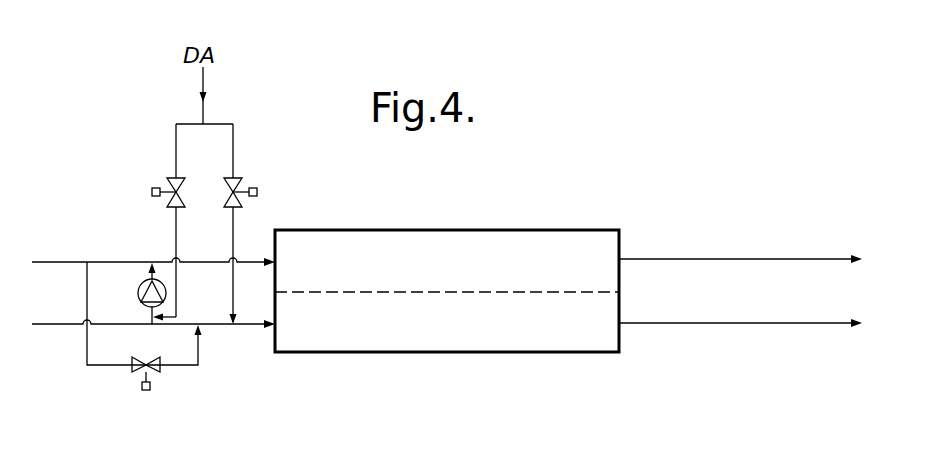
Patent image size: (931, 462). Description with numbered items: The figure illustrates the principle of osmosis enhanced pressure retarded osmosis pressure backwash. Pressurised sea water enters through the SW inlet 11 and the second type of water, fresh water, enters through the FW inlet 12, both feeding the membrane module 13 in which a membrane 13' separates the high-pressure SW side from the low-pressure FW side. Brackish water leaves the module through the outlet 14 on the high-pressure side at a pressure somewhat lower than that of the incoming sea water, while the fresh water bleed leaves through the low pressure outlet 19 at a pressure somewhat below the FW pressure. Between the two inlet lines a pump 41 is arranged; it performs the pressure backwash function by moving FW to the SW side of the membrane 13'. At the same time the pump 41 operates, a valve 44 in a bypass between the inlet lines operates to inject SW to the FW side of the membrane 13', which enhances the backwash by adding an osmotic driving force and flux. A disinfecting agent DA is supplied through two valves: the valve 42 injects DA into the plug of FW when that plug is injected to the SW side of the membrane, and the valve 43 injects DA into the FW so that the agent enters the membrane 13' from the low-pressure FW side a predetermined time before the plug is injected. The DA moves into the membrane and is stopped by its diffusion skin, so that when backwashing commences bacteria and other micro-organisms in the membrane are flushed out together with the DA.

The pressurised SW inlet 11 is at (70, 262).
The FW inlet 12 is at (72, 328).
The membrane module 13 is at (447, 254).
The membrane 13' is at (447, 363).
The outlet on the high pressure side 14 is at (676, 259).
The low pressure outlet 19 is at (678, 323).
The pump 41 is at (141, 283).
The valve 42 is at (172, 180).
The valve 43 is at (238, 180).
The valve 44 is at (160, 368).